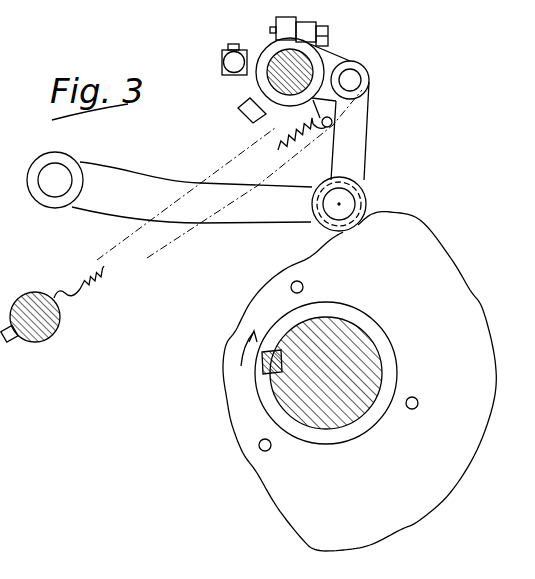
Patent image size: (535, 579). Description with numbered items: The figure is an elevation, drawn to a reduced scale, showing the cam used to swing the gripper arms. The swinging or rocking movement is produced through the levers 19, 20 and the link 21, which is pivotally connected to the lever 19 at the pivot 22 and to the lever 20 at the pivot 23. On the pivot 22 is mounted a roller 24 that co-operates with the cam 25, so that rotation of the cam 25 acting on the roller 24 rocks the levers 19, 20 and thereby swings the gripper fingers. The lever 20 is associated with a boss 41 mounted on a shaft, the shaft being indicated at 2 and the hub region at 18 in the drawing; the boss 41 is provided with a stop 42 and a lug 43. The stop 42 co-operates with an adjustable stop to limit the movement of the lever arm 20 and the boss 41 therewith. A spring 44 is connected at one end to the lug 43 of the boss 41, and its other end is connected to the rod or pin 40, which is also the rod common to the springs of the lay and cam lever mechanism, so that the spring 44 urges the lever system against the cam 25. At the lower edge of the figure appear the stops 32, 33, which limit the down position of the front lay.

The shaft 2 is at (293, 62).
The hub 18 is at (333, 353).
The lever 19 is at (169, 187).
The lever 20 is at (327, 65).
The link 21 is at (347, 156).
The pivot 22 is at (340, 208).
The pivot 23 is at (350, 80).
The roller 24 is at (369, 199).
The cam 25 is at (359, 381).
The stop 32 is at (205, 578).
The stop 33 is at (248, 578).
The rod or pin 40 is at (42, 320).
The boss 41 is at (272, 57).
The stop 42 is at (252, 108).
The lug 43 is at (327, 104).
The spring 44 is at (277, 143).